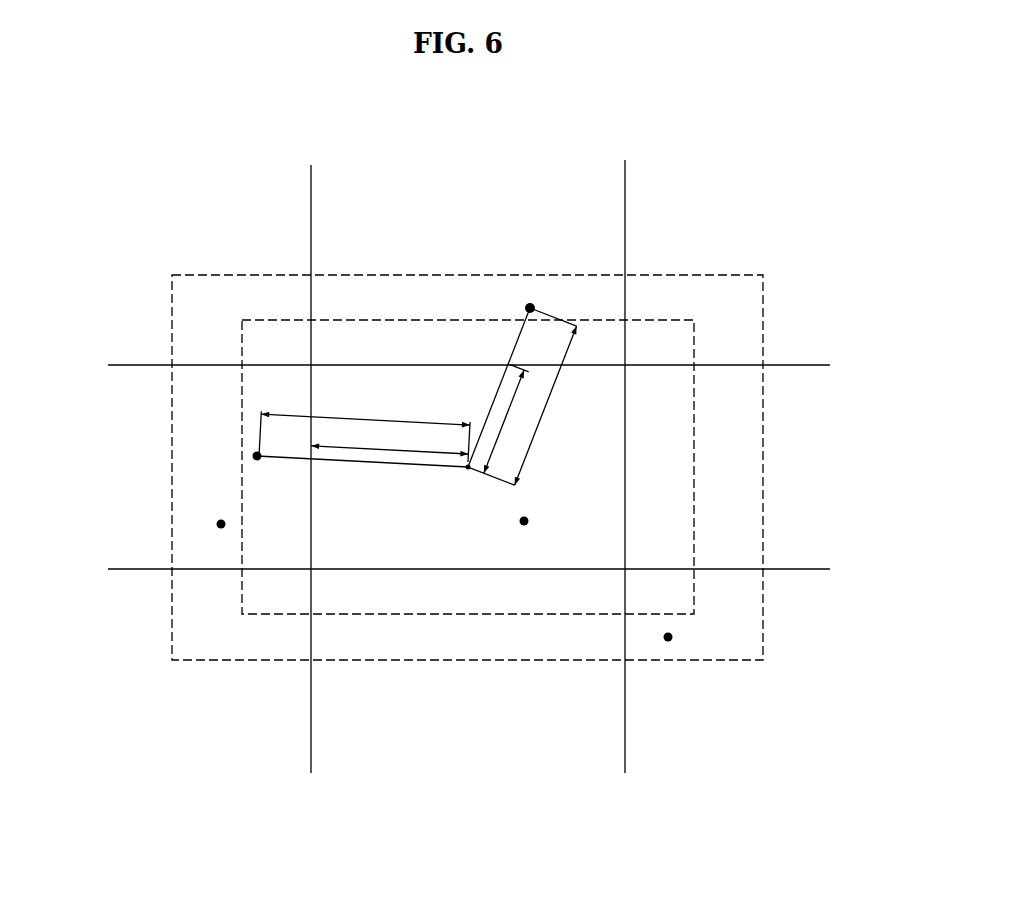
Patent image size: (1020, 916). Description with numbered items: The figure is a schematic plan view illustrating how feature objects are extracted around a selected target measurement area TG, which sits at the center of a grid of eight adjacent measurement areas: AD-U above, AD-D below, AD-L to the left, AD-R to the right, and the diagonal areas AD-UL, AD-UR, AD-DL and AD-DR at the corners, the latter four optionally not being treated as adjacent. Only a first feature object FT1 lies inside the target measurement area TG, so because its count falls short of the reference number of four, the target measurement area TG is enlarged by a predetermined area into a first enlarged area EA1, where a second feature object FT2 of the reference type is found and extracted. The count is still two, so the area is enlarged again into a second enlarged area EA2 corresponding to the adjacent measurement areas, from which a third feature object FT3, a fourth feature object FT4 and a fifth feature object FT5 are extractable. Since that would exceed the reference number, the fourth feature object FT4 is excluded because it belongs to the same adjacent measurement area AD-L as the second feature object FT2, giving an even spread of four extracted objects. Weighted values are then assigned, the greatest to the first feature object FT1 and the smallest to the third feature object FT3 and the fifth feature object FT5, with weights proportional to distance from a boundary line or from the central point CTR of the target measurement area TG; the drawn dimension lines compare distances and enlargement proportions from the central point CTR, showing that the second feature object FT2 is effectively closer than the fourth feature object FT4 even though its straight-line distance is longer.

The first enlarged area EA1 is at (694, 337).
The second enlarged area EA2 is at (680, 275).
The first feature object FT1 is at (524, 521).
The second feature object FT2 is at (257, 456).
The third feature object FT3 is at (530, 308).
The fourth feature object FT4 is at (221, 524).
The fifth feature object FT5 is at (668, 637).
The central point CTR is at (468, 470).
The target measurement area TG is at (350, 564).
The adjacent measurement area (upper left) AD-UL is at (170, 192).
The adjacent measurement area (upper) AD-U is at (503, 192).
The adjacent measurement area (upper right) AD-UR is at (848, 192).
The adjacent measurement area (left) AD-L is at (150, 406).
The adjacent measurement area (right) AD-R is at (848, 469).
The adjacent measurement area (lower left) AD-DL is at (170, 774).
The adjacent measurement area (lower) AD-D is at (498, 774).
The adjacent measurement area (lower right) AD-DR is at (848, 774).